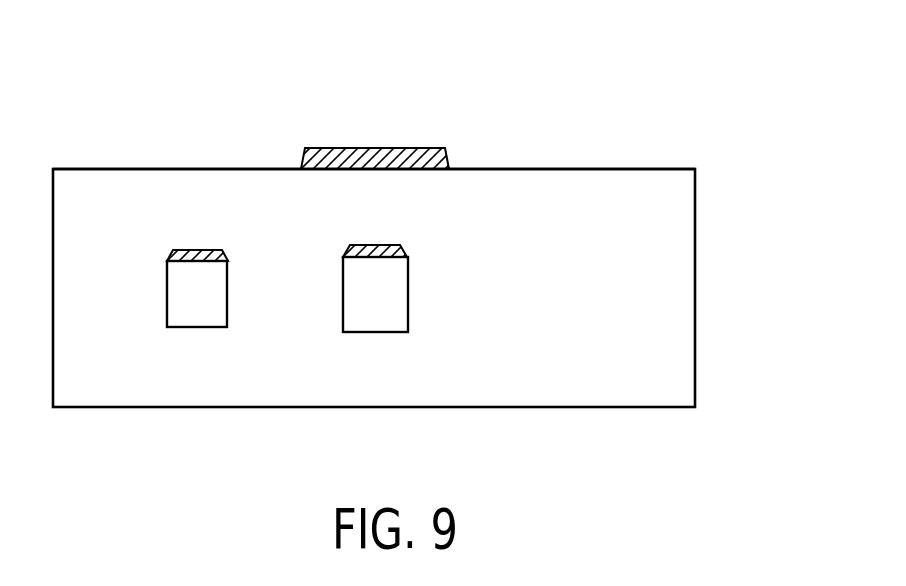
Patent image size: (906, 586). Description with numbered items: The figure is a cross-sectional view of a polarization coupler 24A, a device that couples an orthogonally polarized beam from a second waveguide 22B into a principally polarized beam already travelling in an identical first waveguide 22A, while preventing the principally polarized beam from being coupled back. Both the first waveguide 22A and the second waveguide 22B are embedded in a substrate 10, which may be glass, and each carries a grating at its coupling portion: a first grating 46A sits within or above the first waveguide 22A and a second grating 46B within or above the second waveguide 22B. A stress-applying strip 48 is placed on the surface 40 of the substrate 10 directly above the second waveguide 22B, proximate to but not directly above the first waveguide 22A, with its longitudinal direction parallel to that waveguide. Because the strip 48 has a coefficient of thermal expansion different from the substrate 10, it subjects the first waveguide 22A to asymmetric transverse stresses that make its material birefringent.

The substrate 10 is at (697, 288).
The surface 40 is at (628, 169).
The stress-applying strip 48 is at (415, 148).
The first grating 46A is at (198, 250).
The second grating 46B is at (373, 245).
The first waveguide 22A is at (193, 328).
The second waveguide 22B is at (375, 333).
The polarization coupler 24A is at (575, 46).